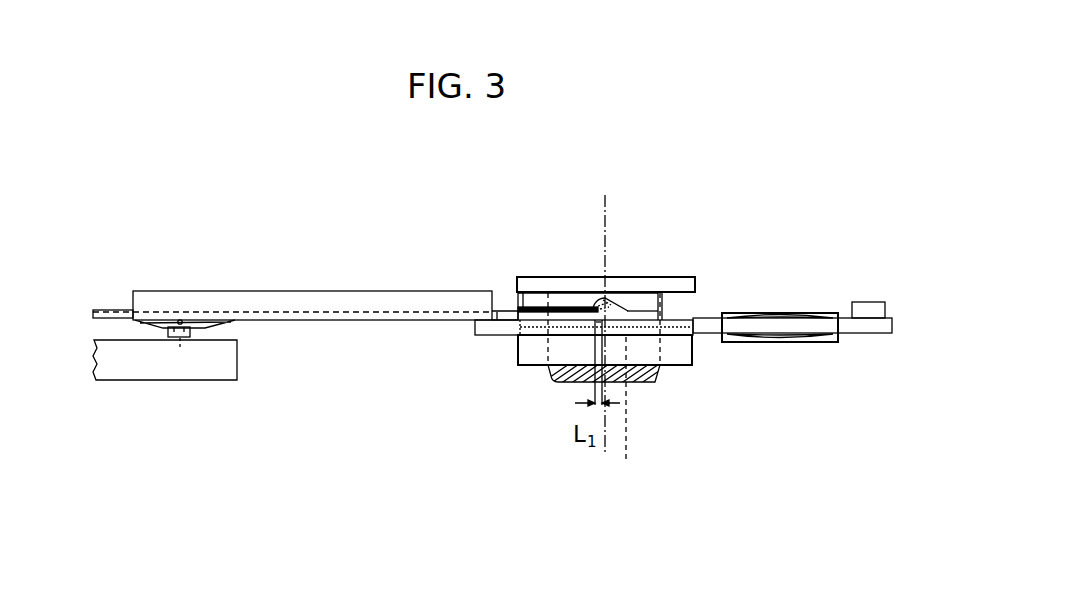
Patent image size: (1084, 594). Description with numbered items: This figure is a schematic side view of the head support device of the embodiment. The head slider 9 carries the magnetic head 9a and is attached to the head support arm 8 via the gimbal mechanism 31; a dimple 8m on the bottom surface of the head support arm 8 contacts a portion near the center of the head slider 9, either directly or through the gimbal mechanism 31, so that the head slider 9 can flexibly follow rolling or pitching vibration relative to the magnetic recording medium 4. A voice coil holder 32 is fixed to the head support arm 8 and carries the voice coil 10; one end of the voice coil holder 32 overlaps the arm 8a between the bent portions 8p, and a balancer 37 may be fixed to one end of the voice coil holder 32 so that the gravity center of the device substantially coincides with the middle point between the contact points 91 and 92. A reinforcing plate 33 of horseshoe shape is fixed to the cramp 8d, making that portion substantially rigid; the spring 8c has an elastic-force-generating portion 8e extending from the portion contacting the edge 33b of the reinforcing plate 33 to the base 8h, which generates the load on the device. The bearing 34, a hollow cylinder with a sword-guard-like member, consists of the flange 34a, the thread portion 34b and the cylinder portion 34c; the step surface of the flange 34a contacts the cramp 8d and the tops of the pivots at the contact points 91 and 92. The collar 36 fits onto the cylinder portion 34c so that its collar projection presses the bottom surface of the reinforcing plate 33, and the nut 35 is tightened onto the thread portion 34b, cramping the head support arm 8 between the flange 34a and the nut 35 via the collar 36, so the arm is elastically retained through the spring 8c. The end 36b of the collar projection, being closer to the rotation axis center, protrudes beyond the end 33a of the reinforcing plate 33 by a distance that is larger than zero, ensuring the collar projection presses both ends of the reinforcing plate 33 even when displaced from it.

The magnetic recording medium 4 is at (205, 365).
The head support arm 8 is at (458, 227).
The arm 8a is at (503, 310).
The spring 8c is at (555, 489).
The cramp 8d is at (518, 347).
The elastic-force-generating portion 8e is at (603, 323).
The base 8h is at (629, 416).
The dimple 8m is at (181, 327).
The bent portions 8p is at (307, 305).
The head slider 9 is at (178, 320).
The magnetic head 9a is at (183, 338).
The voice coil 10 is at (817, 313).
The gimbal mechanism 31 is at (150, 320).
The voice coil holder 32 is at (794, 325).
The reinforcing plate 33 is at (557, 307).
The end of reinforcing plate 33a is at (588, 302).
The edge of reinforcing plate 33b is at (593, 304).
The bearing 34 is at (803, 215).
The flange 34a is at (650, 285).
The thread portion 34b is at (682, 352).
The cylinder portion 34c is at (662, 295).
The nut 35 is at (677, 335).
The collar 36 is at (640, 340).
The end of collar projection 36b is at (560, 366).
The balancer 37 is at (870, 312).
The contact point 91 is at (606, 300).
The contact point 92 is at (628, 263).